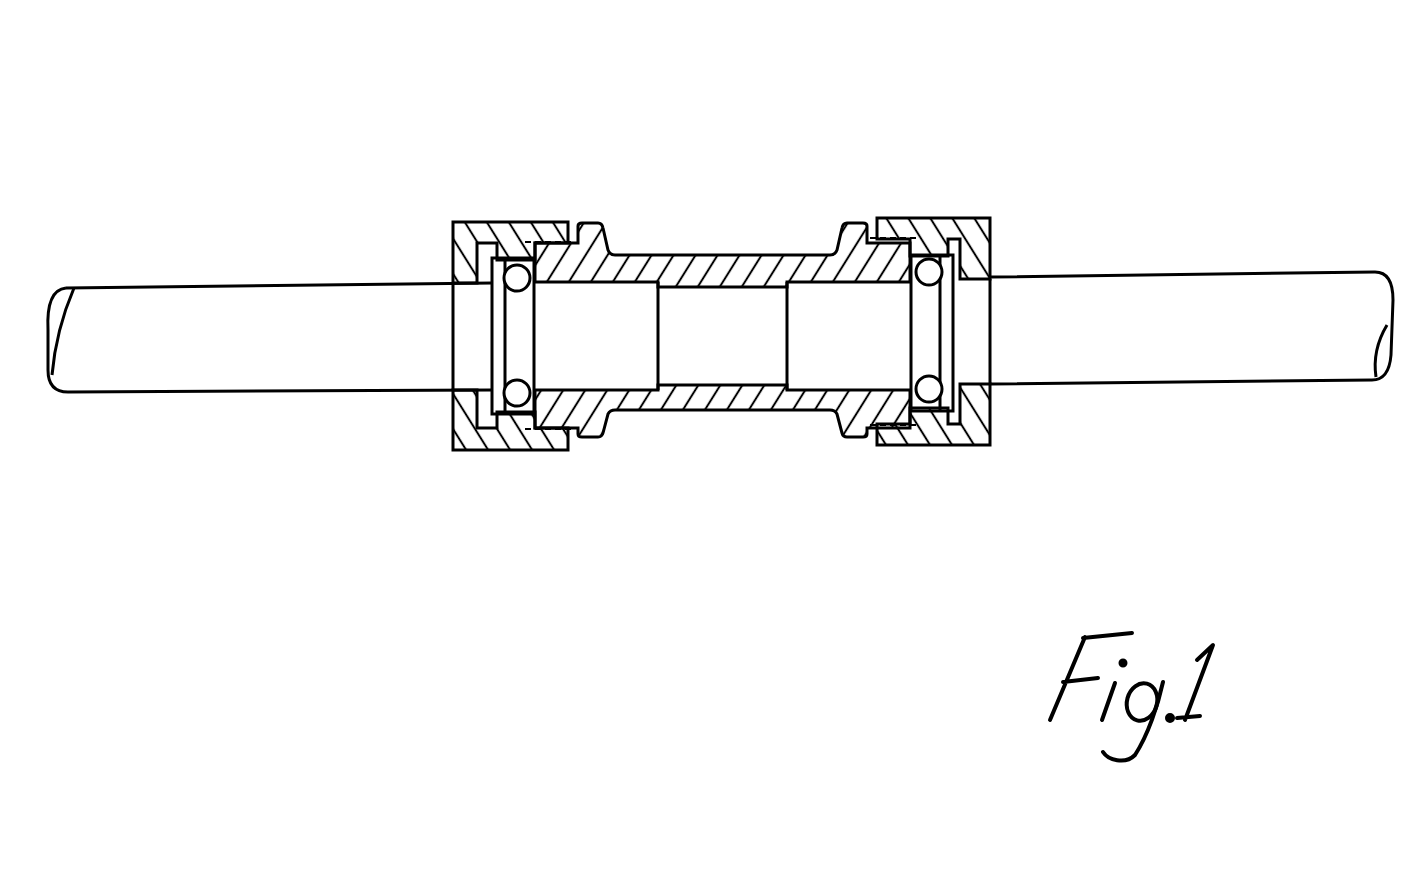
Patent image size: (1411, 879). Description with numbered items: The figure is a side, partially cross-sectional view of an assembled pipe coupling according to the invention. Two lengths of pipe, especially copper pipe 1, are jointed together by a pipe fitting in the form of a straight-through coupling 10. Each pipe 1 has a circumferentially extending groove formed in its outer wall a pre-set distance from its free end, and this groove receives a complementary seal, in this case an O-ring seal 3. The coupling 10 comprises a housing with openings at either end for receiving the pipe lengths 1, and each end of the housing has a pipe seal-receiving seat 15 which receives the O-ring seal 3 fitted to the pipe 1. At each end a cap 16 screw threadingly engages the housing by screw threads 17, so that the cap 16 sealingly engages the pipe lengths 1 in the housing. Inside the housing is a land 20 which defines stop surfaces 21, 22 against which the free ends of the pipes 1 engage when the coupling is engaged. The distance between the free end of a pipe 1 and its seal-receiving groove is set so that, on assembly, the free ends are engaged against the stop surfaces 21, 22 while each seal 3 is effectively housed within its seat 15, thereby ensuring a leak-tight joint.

The copper pipe 1 is at (250, 285).
The O-ring seal 3 is at (518, 394).
The straight-through coupling 10 is at (733, 138).
The pipe seal-receiving seat 15 is at (542, 413).
The cap 16 is at (470, 446).
The screw threads 17 is at (888, 216).
The land 20 is at (747, 411).
The stop surface 21 is at (810, 411).
The stop surface 22 is at (662, 411).